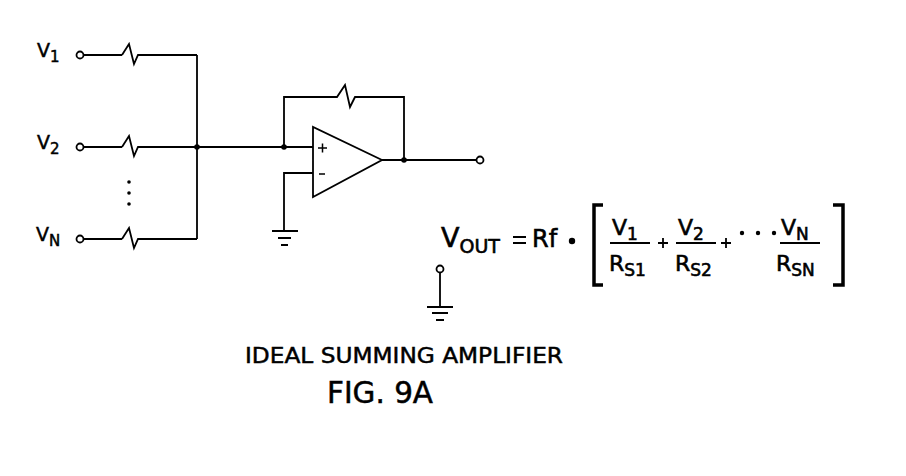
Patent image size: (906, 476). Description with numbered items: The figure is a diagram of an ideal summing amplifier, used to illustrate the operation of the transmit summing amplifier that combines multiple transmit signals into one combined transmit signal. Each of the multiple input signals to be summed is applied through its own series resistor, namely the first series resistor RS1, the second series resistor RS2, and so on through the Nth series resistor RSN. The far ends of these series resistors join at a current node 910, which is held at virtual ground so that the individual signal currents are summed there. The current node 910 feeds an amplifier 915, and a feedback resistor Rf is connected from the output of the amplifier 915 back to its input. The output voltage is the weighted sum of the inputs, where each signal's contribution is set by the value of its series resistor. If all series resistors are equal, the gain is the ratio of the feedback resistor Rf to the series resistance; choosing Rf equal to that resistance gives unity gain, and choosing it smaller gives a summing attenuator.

The current node 910 is at (197, 147).
The amplifier 915 is at (333, 186).
The series resistor RS1 is at (152, 36).
The series resistor RS2 is at (152, 128).
The series resistor RSN is at (152, 255).
The feedback resistor Rf is at (344, 104).